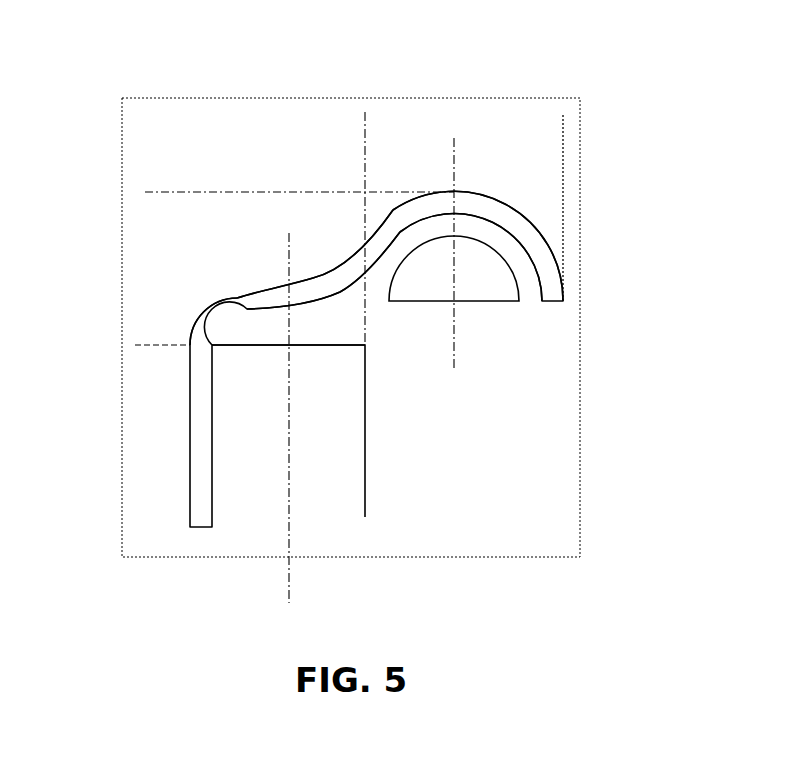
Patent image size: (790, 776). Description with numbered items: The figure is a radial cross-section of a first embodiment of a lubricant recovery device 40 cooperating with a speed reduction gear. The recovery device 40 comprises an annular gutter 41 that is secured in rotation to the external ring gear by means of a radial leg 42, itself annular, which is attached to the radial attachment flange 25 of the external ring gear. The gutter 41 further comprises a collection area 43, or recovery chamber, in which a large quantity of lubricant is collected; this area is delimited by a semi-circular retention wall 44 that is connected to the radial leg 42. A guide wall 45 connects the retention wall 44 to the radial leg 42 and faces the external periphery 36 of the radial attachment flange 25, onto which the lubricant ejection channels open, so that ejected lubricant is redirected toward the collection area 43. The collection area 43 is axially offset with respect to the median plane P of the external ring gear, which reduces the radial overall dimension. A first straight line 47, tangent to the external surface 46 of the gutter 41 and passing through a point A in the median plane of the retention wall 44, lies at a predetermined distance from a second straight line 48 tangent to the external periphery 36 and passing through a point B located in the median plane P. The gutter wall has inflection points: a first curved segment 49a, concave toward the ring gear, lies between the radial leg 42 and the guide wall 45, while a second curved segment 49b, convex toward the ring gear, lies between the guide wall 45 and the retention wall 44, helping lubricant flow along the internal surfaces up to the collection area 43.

The radial attachment flange 25 is at (340, 462).
The external periphery 36 is at (310, 343).
The recovery device 40 is at (549, 178).
The gutter 41 is at (555, 252).
The radial leg 42 is at (188, 467).
The collection area 43 is at (463, 280).
The retention wall 44 is at (518, 227).
The guide wall 45 is at (280, 293).
The external surface 46 is at (563, 276).
The first straight line 47 is at (193, 192).
The second straight line 48 is at (170, 348).
The first curved segment 49a is at (203, 320).
The second curved segment 49b is at (347, 273).
The point A is at (455, 190).
The point B is at (290, 345).
The median plane P is at (290, 580).